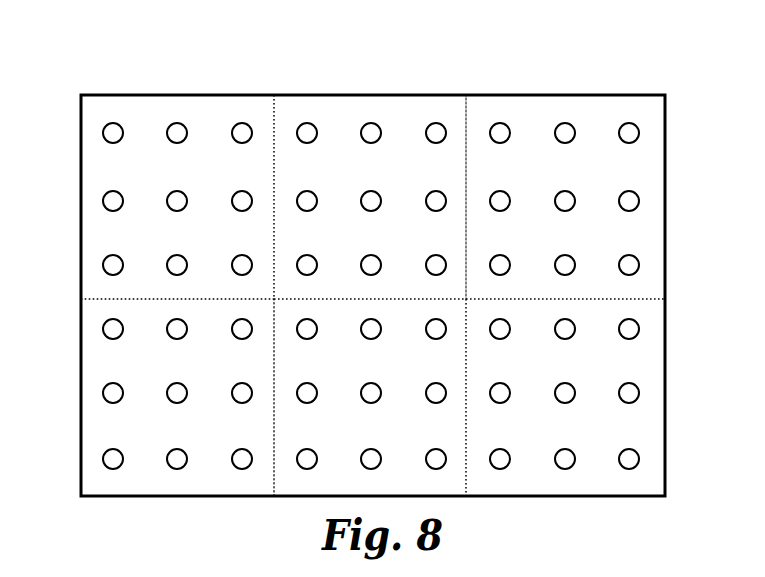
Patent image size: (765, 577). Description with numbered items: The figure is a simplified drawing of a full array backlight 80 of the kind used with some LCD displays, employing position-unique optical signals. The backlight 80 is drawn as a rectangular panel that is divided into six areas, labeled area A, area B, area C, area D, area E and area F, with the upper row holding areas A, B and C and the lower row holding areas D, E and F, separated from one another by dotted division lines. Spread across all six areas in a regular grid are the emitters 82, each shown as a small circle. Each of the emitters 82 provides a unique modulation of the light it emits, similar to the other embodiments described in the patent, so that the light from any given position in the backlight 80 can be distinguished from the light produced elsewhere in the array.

The full array backlight 80 is at (392, 258).
The emitters 82 is at (171, 268).
The area A is at (177, 197).
The area B is at (370, 197).
The area C is at (565, 197).
The area D is at (177, 397).
The area E is at (370, 397).
The area F is at (565, 397).